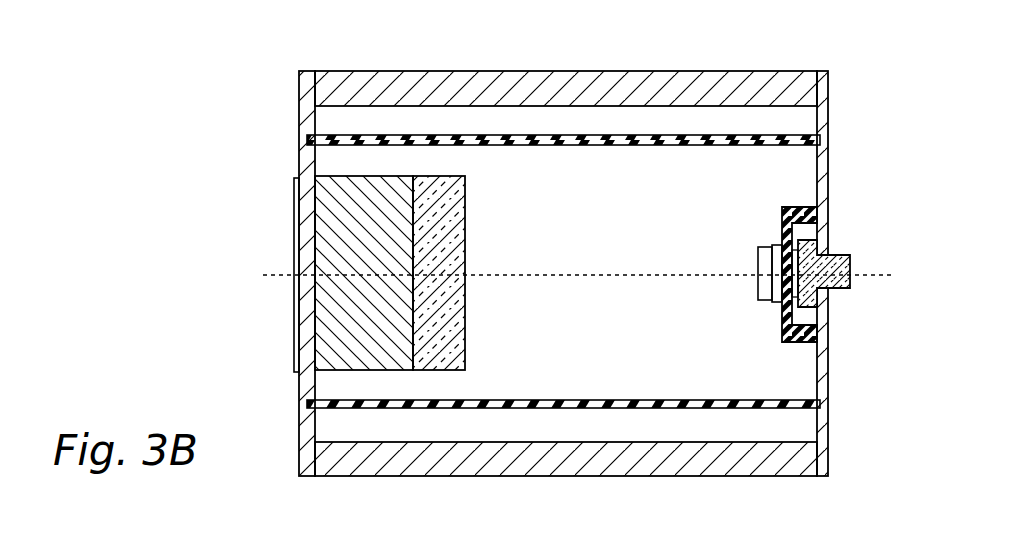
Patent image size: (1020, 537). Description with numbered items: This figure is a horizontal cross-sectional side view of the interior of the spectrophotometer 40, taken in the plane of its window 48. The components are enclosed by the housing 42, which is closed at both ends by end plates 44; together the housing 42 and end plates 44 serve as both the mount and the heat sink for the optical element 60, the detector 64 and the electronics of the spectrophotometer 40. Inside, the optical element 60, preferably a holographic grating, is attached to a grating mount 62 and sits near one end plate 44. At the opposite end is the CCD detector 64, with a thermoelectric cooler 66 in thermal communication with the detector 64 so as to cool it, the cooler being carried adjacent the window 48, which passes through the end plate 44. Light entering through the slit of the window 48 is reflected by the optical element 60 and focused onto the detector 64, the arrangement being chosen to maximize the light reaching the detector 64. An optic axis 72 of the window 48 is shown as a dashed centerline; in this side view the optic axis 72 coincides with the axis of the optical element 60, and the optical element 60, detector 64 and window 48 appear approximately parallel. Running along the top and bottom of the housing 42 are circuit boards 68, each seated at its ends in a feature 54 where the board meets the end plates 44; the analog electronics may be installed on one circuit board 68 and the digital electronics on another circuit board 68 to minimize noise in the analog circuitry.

The spectrophotometer 40 is at (197, 279).
The housing 42 is at (566, 71).
The end plates 44 is at (312, 136).
The window 48 is at (838, 288).
The groove 54 is at (313, 138).
The optical element 60 is at (466, 313).
The grating mount 62 is at (392, 175).
The CCD detector 64 is at (758, 251).
The thermoelectric cooler 66 is at (782, 325).
The circuit board 68 is at (628, 147).
The optic axis 72 is at (668, 276).